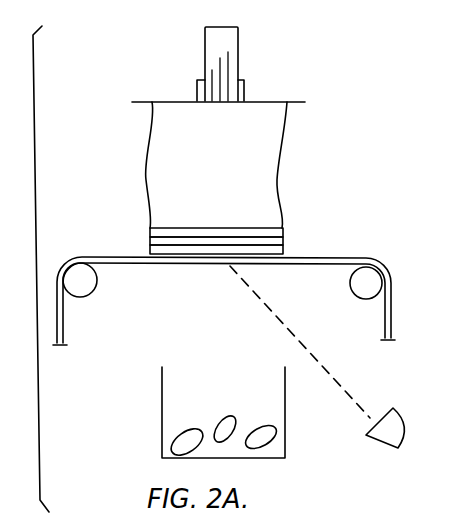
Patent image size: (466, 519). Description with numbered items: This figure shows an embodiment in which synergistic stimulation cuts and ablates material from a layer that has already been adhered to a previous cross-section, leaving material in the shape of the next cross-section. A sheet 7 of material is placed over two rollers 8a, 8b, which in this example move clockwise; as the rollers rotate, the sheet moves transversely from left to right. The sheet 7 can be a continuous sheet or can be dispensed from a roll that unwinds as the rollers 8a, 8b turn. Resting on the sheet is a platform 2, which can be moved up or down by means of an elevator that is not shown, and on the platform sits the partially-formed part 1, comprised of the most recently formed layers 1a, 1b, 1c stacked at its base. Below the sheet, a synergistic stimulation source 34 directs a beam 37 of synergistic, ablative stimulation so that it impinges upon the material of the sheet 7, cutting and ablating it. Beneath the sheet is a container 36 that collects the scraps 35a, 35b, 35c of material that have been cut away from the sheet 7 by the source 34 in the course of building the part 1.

The partially-formed part 1 is at (287, 127).
The most-recently formed layer 1a is at (285, 249).
The most-recently formed layer 1b is at (285, 240).
The most-recently formed layer 1c is at (285, 231).
The platform 2 is at (267, 100).
The sheet of material 7 is at (83, 257).
The roller 8a is at (87, 278).
The roller 8b is at (368, 291).
The synergistic stimulation source 34 is at (402, 417).
The scrap of material 35a is at (190, 430).
The scrap of material 35b is at (227, 417).
The scrap of material 35c is at (272, 427).
The container 36 is at (162, 437).
The beam of synergistic stimulation 37 is at (262, 302).